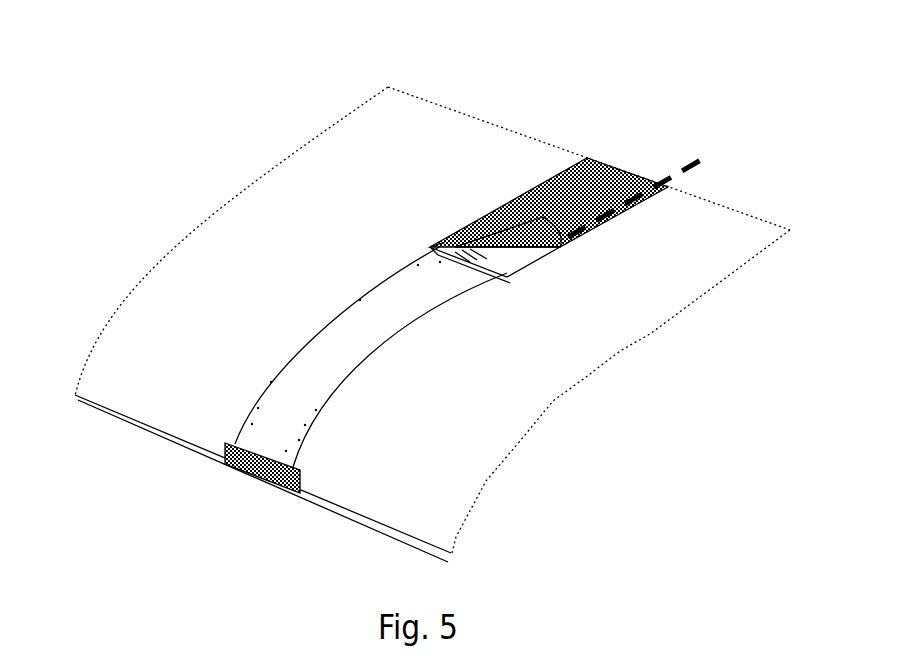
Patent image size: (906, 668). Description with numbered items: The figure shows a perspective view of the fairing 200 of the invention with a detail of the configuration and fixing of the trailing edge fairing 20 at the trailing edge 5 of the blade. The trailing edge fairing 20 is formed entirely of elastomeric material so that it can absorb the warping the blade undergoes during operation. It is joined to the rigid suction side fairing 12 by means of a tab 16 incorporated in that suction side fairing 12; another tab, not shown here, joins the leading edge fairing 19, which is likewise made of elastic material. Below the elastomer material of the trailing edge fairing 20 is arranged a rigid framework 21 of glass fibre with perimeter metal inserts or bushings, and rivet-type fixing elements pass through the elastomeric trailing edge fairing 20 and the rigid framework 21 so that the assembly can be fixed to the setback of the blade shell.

The trailing edge 5 is at (456, 110).
The suction side fairing 12 is at (348, 323).
The tab 16 is at (440, 240).
The leading edge fairing 19 is at (253, 476).
The trailing edge fairing 20 is at (568, 177).
The rigid framework 21 is at (533, 263).
The fairing 200 is at (268, 343).